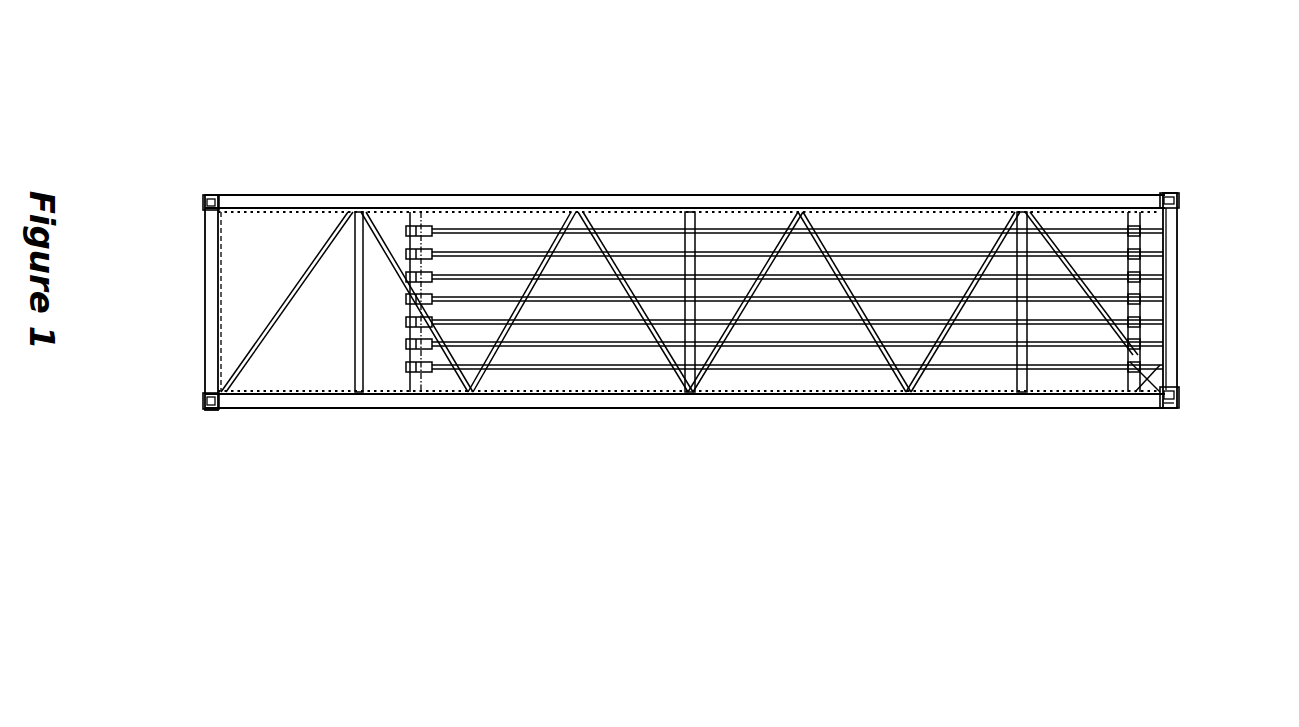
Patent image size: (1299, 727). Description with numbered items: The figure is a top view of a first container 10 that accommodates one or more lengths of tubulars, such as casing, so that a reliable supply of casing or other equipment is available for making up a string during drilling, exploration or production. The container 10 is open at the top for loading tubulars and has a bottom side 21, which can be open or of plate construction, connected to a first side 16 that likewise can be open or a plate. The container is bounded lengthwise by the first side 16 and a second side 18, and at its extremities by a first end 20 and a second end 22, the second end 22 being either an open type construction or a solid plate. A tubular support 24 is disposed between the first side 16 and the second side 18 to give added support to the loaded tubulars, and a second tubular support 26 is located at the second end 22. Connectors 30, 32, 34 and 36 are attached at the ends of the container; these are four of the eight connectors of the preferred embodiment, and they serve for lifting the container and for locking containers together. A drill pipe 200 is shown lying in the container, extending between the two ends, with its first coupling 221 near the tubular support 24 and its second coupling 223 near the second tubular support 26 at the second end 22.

The first container 10 is at (1035, 160).
The first side 16 is at (460, 200).
The second side 18 is at (510, 403).
The first end 20 is at (203, 308).
The bottom side 21 is at (293, 372).
The second end 22 is at (1176, 300).
The tubular support 24 is at (420, 225).
The second tubular support 26 is at (1140, 215).
The connector 30 is at (210, 195).
The connector 32 is at (203, 410).
The connector 34 is at (1180, 197).
The connector 36 is at (1178, 400).
The drill pipe 200 is at (747, 370).
The first coupling 221 is at (420, 385).
The second coupling 223 is at (1143, 383).